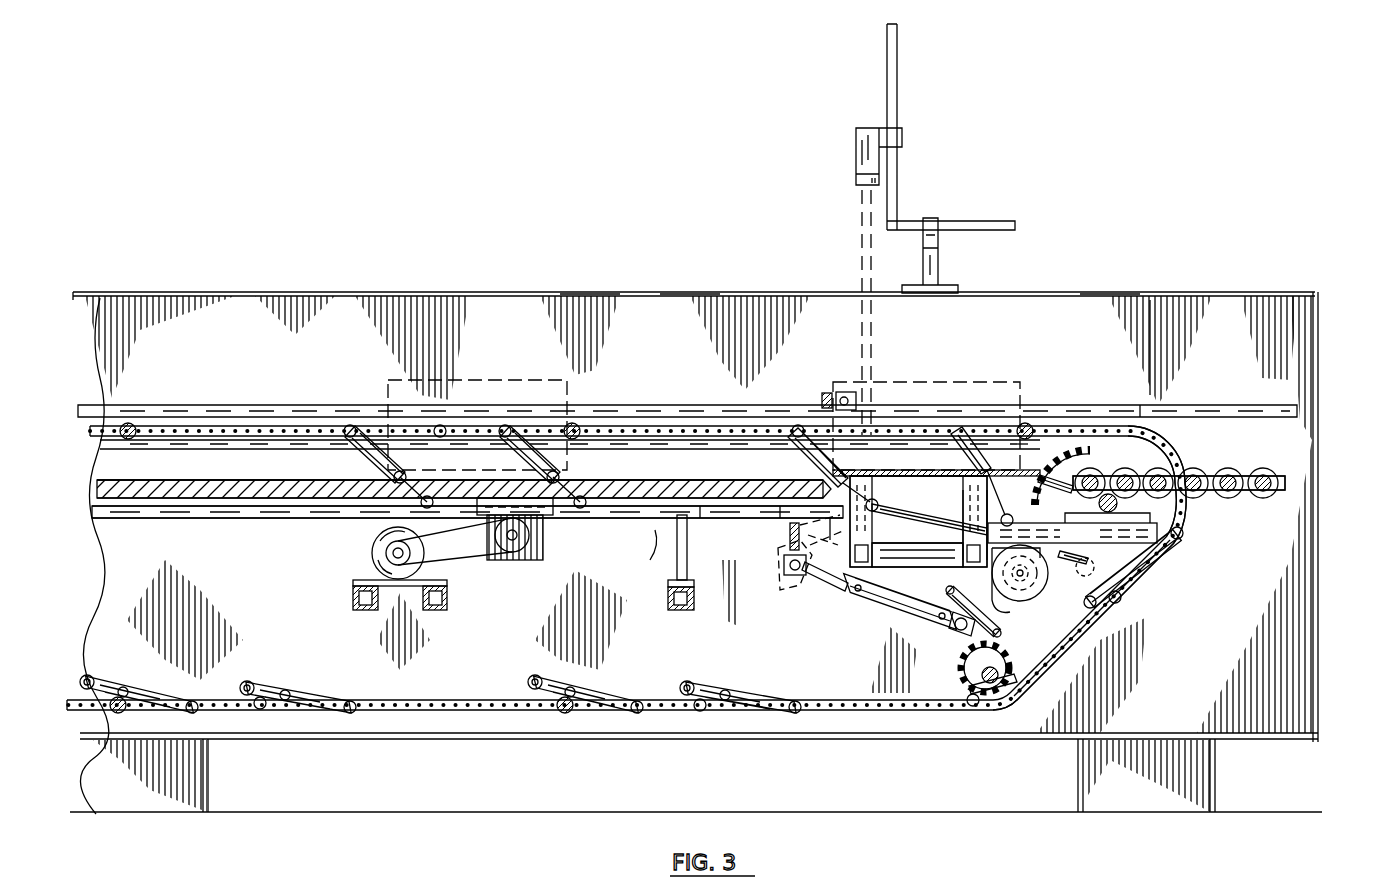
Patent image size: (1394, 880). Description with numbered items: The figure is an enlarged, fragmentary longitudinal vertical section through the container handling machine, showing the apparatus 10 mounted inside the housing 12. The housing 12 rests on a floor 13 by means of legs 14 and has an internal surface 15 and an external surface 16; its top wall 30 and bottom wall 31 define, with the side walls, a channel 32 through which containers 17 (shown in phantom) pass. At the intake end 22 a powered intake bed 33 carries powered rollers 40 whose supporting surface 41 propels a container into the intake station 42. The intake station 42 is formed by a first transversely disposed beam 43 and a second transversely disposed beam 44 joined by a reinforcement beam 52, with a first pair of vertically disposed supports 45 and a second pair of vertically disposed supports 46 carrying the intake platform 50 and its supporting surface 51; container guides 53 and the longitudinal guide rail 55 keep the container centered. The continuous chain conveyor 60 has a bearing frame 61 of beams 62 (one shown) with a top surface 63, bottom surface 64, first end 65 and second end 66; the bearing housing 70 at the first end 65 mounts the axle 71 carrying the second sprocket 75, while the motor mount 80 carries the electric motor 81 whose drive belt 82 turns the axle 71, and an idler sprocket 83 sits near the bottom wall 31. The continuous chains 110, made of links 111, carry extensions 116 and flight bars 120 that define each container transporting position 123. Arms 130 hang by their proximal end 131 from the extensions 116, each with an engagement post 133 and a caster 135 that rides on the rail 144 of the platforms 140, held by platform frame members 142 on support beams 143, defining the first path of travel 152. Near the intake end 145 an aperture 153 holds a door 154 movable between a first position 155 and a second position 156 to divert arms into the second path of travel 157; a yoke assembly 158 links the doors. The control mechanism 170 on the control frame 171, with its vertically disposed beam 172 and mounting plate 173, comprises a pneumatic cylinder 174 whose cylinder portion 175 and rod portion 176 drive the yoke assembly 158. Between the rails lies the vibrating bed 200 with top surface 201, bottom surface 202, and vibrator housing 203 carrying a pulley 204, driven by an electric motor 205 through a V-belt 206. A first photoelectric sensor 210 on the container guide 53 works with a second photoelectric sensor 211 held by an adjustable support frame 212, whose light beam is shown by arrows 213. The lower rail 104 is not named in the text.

The apparatus 10 is at (795, 600).
The housing 12 is at (1220, 295).
The floor 13 is at (975, 812).
The legs 14 is at (210, 776).
The internal surface 15 is at (1145, 315).
The external surface 16 is at (1100, 295).
The containers 17 is at (470, 380).
The intake end 22 is at (1305, 360).
The top wall 30 is at (672, 322).
The bottom wall 31 is at (795, 740).
The channel 32 is at (590, 322).
The powered intake bed 33 is at (1285, 447).
The powered rollers 40 is at (1262, 497).
The supporting surface 41 is at (1198, 468).
The intake station 42 is at (1058, 478).
The first transversely disposed beam 43 is at (862, 568).
The second transversely disposed beam 44 is at (957, 533).
The first pair of vertically disposed supports 45 is at (833, 469).
The second pair of vertically disposed supports 46 is at (975, 512).
The intake platform 50 is at (893, 478).
The supporting surface 51 is at (875, 462).
The reinforcement beam 52 is at (932, 562).
The container guides 53 is at (735, 415).
The guide rail 55 is at (226, 413).
The continuous chain conveyor 60 is at (1135, 597).
The bearing frame 61 is at (1090, 542).
The beams 62 is at (1183, 537).
The top surface 63 is at (992, 515).
The bottom surface 64 is at (1144, 590).
The first end 65 is at (1157, 582).
The second end 66 is at (993, 570).
The bearing housing 70 is at (1178, 518).
The axle 71 is at (1098, 505).
The second sprocket 75 is at (1140, 467).
The motor mount 80 is at (1045, 578).
The electric motor 81 is at (1026, 586).
The drive belt 82 is at (1085, 562).
The idler sprockets 83 is at (955, 678).
The lower rail 104 is at (705, 445).
The continuous chains 110 is at (712, 428).
The links 111 is at (255, 428).
The extensions 116 is at (352, 425).
The flight bars 120 is at (130, 424).
The container transporting position 123 is at (113, 390).
The arms 130 is at (520, 430).
The proximal end 131 is at (347, 425).
The engagement post 133 is at (403, 472).
The caster 135 is at (583, 508).
The platforms 140 is at (280, 530).
The platform frame members 142 is at (677, 572).
The support beams 143 is at (352, 604).
The rail 144 is at (175, 520).
The intake end 145 is at (905, 526).
The first path of travel 152 is at (320, 512).
The aperture 153 is at (758, 535).
The door 154 is at (785, 516).
The first position 155 is at (755, 516).
The second position 156 is at (782, 568).
The second path of travel 157 is at (655, 536).
The yoke assembly 158 is at (790, 535).
The control mechanism 170 is at (870, 612).
The control frame 171 is at (948, 592).
The vertically disposed beam 172 is at (978, 603).
The mounting plate 173 is at (997, 638).
The pneumatic cylinder 174 is at (957, 636).
The cylinder portion 175 is at (920, 618).
The rod portion 176 is at (810, 570).
The vibrating bed 200 is at (243, 482).
The top surface 201 is at (185, 482).
The bottom surface 202 is at (195, 500).
The vibrator housing 203 is at (542, 543).
The pulley 204 is at (518, 552).
The electric motor 205 is at (372, 551).
The V-belt 206 is at (458, 550).
The first photoelectric sensor 210 is at (826, 392).
The second photoelectric sensor 211 is at (856, 134).
The adjustable support frame 212 is at (972, 222).
The arrows 213 is at (855, 241).